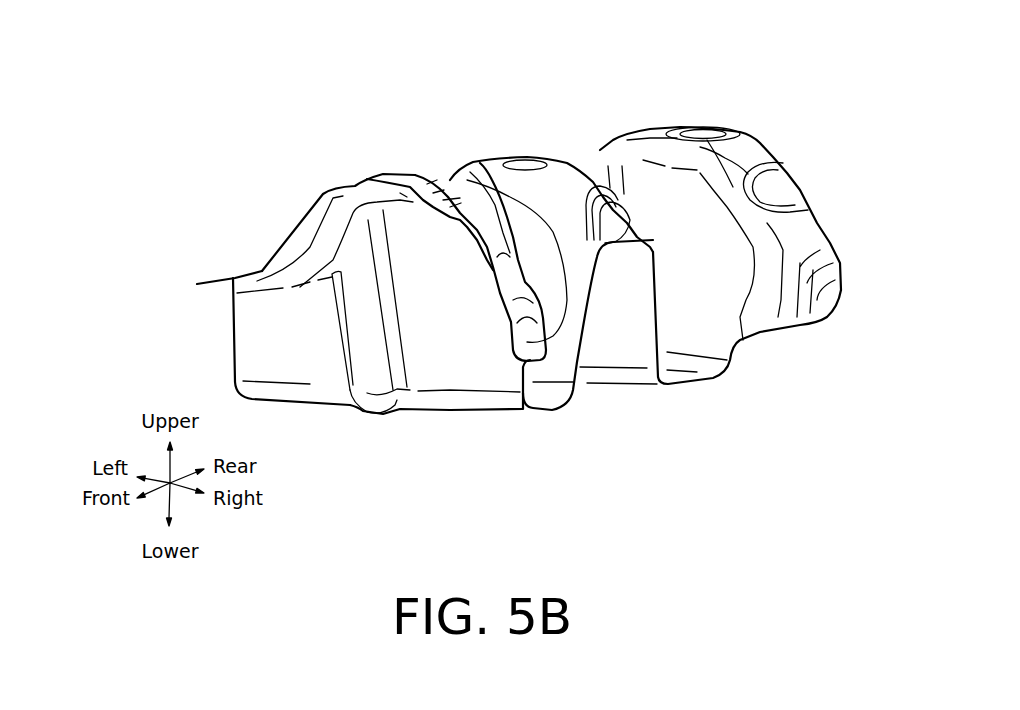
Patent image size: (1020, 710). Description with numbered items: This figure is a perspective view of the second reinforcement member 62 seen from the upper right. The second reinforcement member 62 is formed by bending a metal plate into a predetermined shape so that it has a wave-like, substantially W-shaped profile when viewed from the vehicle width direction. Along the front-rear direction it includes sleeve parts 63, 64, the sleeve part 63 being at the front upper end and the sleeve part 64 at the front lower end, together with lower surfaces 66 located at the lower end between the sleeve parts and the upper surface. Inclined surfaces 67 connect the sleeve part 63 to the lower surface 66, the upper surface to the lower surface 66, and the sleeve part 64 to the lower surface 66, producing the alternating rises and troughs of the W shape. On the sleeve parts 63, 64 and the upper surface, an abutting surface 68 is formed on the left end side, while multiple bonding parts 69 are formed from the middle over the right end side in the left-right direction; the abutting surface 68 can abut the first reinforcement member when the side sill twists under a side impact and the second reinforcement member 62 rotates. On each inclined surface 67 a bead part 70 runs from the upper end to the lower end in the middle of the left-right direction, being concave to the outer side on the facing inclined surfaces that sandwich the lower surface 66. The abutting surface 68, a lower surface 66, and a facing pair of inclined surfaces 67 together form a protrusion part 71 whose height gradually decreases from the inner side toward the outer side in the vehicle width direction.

The second reinforcement member 62 is at (604, 255).
The sleeve part 63 is at (820, 327).
The sleeve part 64 is at (212, 283).
The lower surface 66 is at (543, 405).
The inclined surface 67 is at (480, 340).
The abutting surface 68 is at (233, 278).
The bonding part 69 is at (470, 172).
The bead part 70 is at (360, 327).
The protrusion part 71 is at (226, 362).